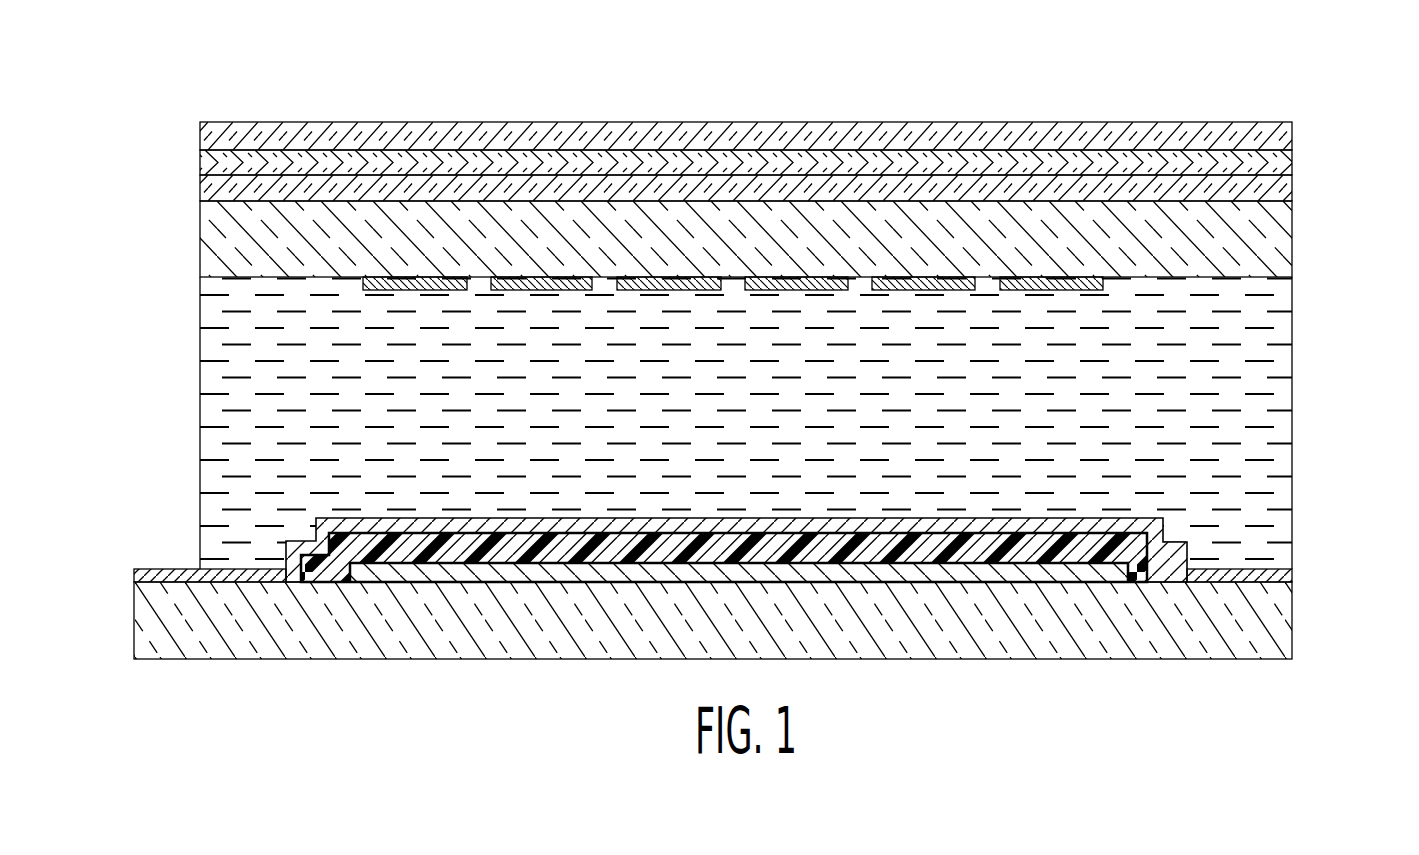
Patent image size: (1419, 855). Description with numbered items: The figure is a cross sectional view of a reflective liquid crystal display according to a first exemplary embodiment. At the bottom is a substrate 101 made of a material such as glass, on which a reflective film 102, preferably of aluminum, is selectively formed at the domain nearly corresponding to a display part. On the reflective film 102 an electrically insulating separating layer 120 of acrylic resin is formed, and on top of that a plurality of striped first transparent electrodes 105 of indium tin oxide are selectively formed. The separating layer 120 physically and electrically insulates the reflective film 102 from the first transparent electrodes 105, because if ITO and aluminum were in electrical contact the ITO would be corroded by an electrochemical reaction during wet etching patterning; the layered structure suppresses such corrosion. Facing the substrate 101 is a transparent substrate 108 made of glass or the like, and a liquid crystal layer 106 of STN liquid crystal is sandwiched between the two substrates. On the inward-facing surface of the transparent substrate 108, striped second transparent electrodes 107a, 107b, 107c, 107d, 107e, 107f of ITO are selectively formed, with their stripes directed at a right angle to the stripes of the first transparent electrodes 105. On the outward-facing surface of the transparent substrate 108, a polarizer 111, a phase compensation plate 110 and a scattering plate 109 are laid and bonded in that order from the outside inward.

The substrate 101 is at (1292, 637).
The reflective film 102 is at (1080, 582).
The first transparent electrodes 105 is at (1128, 521).
The separating layer 120 is at (1150, 565).
The liquid crystal layer 106 is at (1272, 353).
The second transparent electrode 107a is at (405, 277).
The second transparent electrode 107b is at (540, 277).
The second transparent electrode 107c is at (655, 277).
The second transparent electrode 107d is at (783, 277).
The second transparent electrode 107e is at (912, 277).
The second transparent electrode 107f is at (1052, 277).
The transparent substrate 108 is at (1292, 228).
The scattering plate 109 is at (1292, 190).
The phase compensation plate 110 is at (1292, 165).
The polarizer 111 is at (1292, 135).